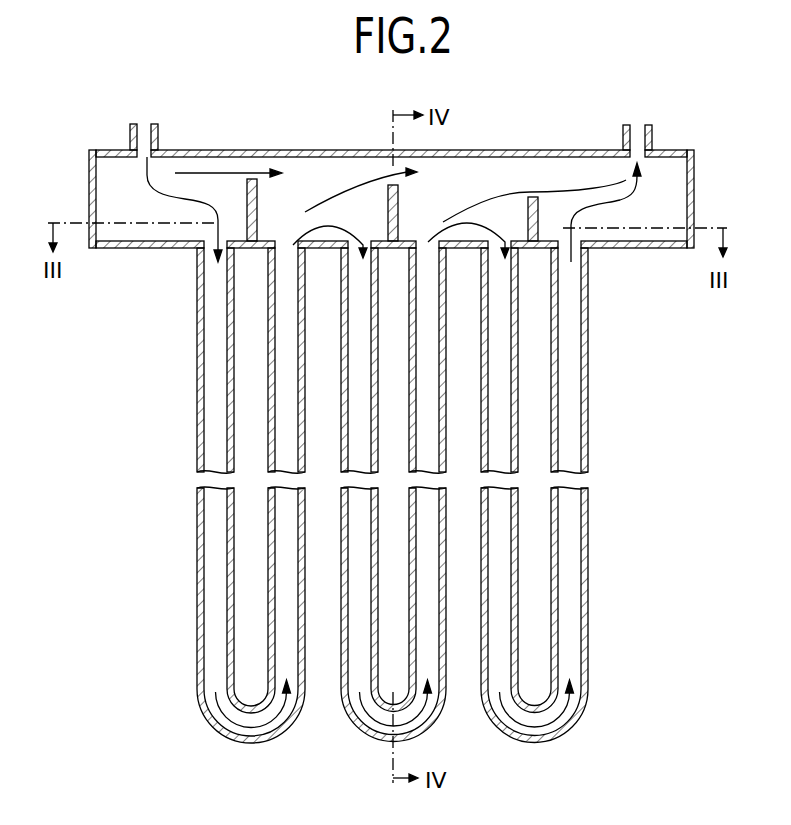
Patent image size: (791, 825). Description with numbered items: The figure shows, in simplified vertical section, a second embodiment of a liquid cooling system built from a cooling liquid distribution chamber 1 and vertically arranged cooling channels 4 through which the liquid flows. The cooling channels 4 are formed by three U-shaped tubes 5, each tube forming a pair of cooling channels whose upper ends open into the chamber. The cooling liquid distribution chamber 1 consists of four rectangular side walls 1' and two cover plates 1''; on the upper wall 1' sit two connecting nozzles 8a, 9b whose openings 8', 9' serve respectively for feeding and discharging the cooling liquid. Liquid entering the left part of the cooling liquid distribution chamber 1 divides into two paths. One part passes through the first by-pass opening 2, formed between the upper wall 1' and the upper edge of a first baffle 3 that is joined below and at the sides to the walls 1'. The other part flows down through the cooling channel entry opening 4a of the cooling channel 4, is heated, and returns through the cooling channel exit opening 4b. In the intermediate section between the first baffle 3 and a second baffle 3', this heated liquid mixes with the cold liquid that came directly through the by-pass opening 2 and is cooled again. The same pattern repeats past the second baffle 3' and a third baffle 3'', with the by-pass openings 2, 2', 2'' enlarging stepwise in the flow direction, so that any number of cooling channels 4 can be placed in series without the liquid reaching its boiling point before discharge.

The cooling liquid distribution chamber 1 is at (391, 169).
The side wall 1' is at (391, 118).
The cover plate 1'' is at (396, 199).
The first by-pass opening 2 is at (250, 159).
The second by-pass opening 2' is at (379, 160).
The third by-pass opening 2'' is at (548, 160).
The first baffle 3 is at (342, 168).
The second baffle 3' is at (513, 168).
The third baffle 3'' is at (590, 170).
The cooling channel 4 is at (290, 442).
The cooling channel entry opening 4a is at (203, 248).
The cooling channel exit opening 4b is at (295, 241).
The U-shaped tube 5 is at (200, 575).
The connecting nozzle 8a is at (133, 124).
The feed opening 8' is at (180, 113).
The discharge opening 9' is at (618, 114).
The connecting nozzle 9b is at (655, 128).